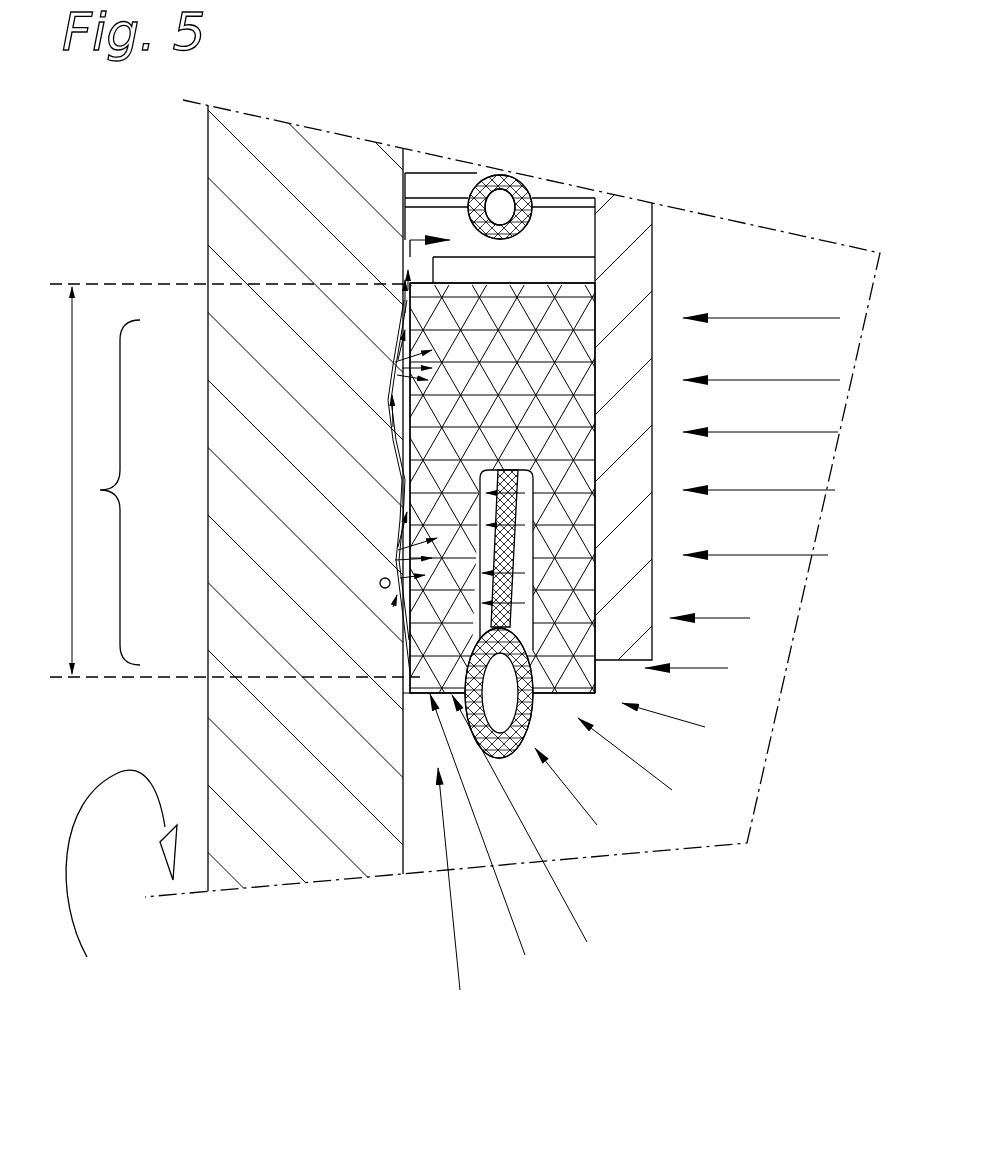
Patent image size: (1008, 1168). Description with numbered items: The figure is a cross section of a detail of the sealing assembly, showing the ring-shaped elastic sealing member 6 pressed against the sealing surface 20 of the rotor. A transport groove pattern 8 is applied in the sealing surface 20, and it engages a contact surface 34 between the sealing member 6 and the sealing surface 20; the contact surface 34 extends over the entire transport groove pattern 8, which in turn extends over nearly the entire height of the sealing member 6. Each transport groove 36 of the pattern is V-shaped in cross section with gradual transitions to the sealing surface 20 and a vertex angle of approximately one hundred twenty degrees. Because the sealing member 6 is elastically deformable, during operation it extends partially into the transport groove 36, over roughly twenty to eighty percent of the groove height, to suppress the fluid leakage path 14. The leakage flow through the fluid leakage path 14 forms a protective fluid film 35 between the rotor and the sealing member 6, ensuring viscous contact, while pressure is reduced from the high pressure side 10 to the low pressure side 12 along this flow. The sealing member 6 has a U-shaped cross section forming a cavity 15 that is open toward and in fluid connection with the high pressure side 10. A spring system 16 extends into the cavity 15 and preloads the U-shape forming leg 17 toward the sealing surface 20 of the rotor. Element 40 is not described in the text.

The sealing member 6 is at (552, 355).
The transport groove pattern 8 is at (104, 490).
The high pressure side 10 is at (882, 734).
The low pressure side 12 is at (88, 742).
The fluid leakage path 14 is at (418, 443).
The cavity 15 is at (517, 540).
The spring system 16 is at (538, 725).
The U-shape forming leg 17 is at (468, 718).
The sealing surface 20 is at (402, 318).
The contact surface 34 is at (73, 480).
The protective fluid film 35 is at (414, 682).
The transport groove 36 is at (393, 383).
The gap 40 is at (395, 563).